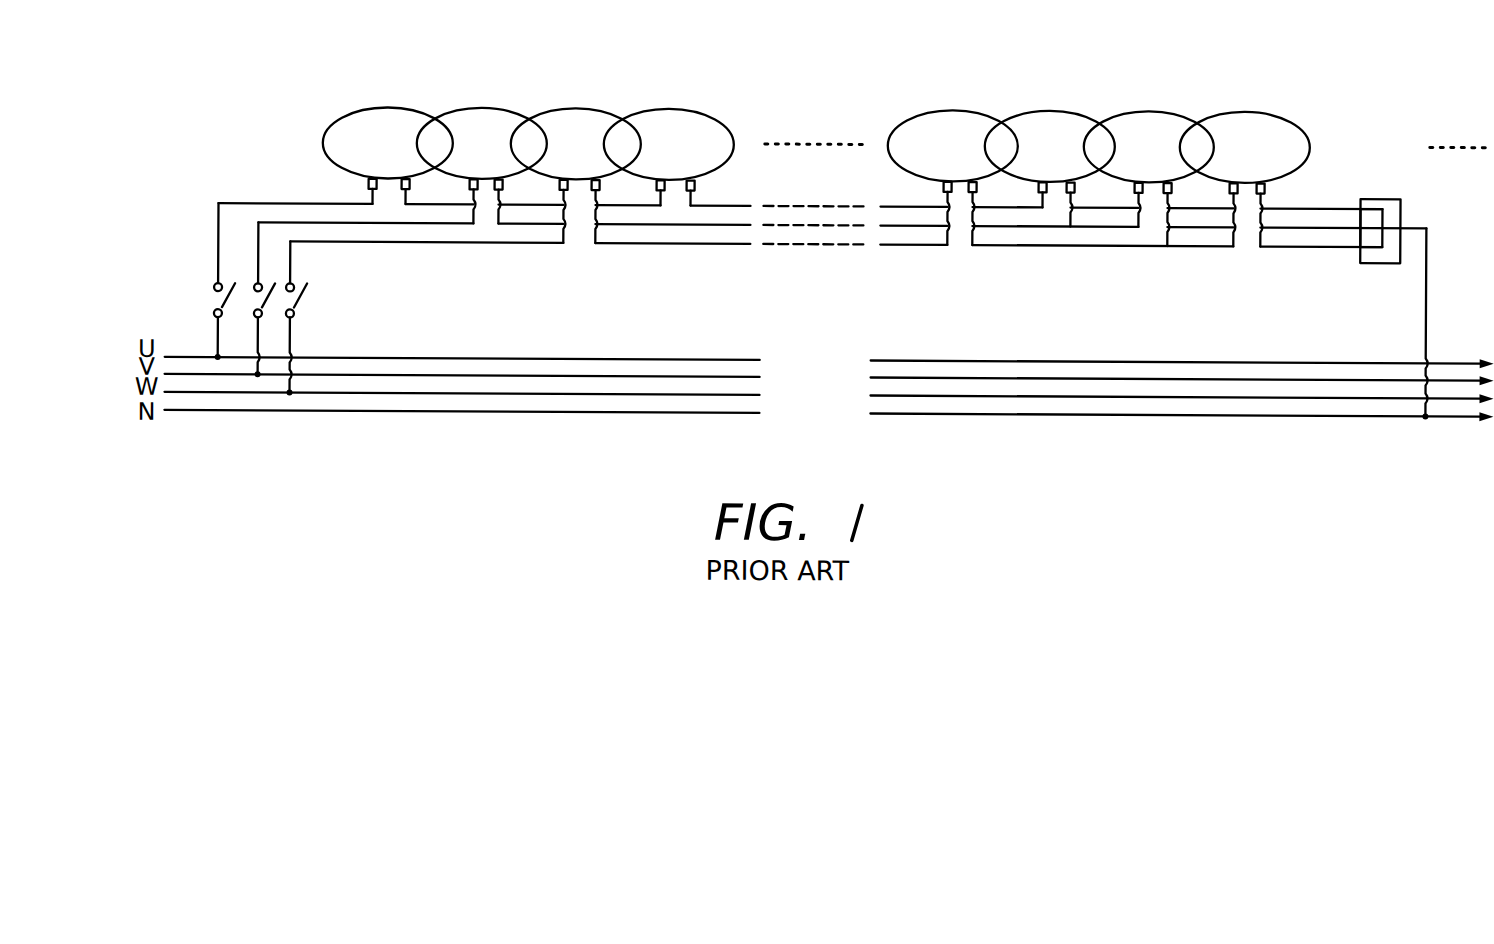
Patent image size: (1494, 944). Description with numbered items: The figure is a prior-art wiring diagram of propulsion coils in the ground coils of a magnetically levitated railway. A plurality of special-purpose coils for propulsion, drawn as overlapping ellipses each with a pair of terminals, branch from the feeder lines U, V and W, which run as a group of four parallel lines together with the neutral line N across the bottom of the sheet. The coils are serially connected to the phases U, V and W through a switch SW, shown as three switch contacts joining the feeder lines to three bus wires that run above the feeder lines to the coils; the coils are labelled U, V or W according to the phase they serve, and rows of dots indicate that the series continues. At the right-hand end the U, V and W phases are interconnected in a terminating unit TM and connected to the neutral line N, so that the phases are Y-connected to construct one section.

The switch SW is at (200, 288).
The terminating unit TM is at (1403, 202).